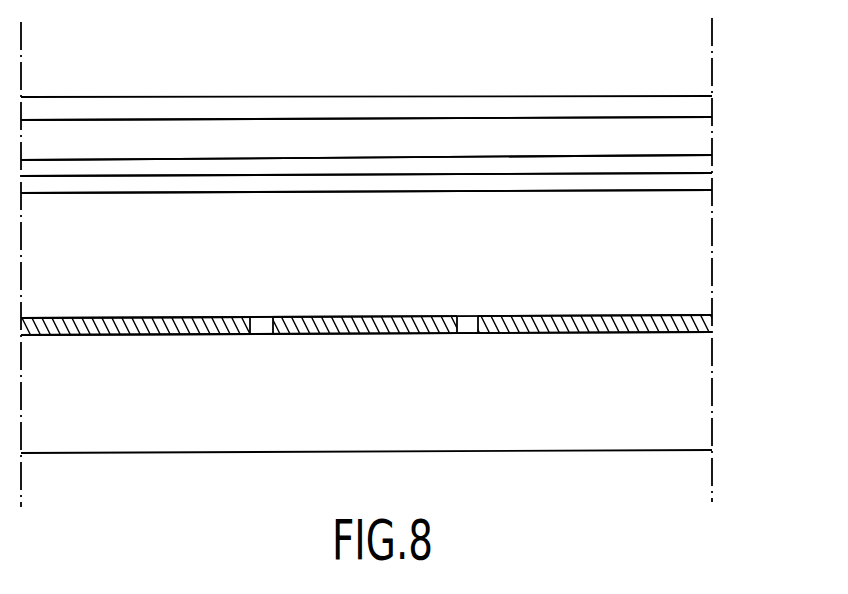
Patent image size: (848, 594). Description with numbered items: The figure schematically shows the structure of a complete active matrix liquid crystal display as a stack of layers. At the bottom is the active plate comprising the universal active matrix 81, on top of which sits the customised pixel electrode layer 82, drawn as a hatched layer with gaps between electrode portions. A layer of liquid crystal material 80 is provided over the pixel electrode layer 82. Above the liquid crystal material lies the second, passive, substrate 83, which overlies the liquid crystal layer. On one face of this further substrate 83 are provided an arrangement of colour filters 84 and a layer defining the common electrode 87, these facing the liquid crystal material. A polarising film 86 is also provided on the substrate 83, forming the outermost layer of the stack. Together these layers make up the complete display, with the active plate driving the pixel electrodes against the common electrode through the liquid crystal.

The polarising film 86 is at (700, 100).
The second passive substrate 83 is at (700, 130).
The colour filters 84 is at (700, 168).
The common electrode 87 is at (700, 184).
The layer of liquid crystal material 80 is at (700, 247).
The pixel electrode layer 82 is at (702, 327).
The UAM (active plate) 81 is at (738, 323).